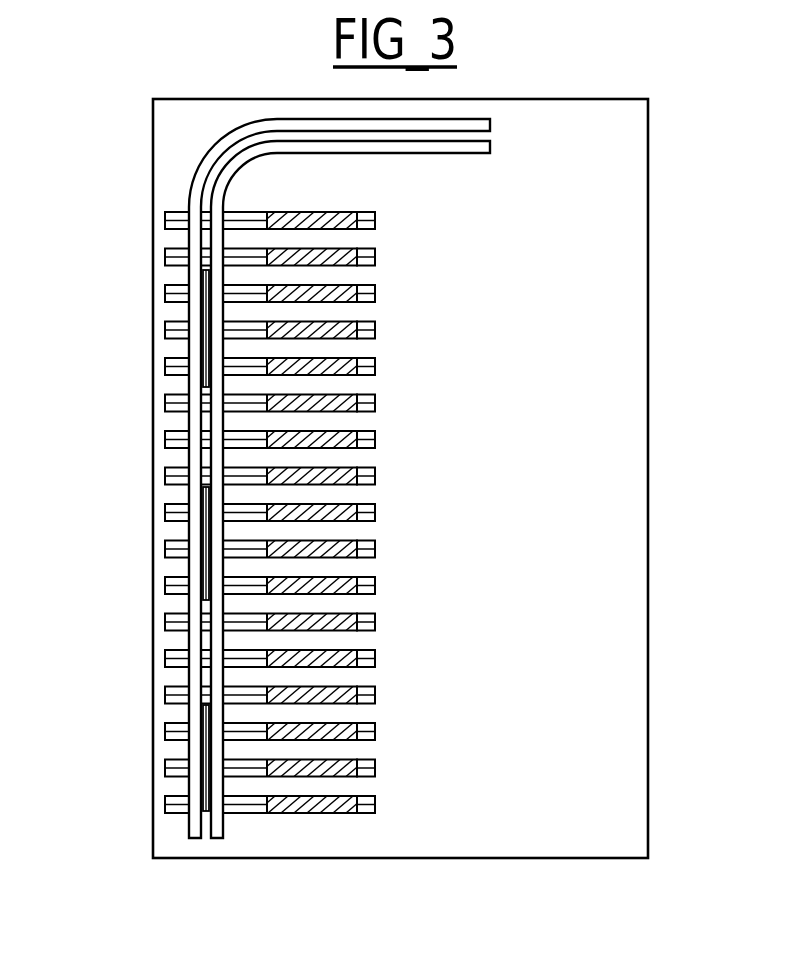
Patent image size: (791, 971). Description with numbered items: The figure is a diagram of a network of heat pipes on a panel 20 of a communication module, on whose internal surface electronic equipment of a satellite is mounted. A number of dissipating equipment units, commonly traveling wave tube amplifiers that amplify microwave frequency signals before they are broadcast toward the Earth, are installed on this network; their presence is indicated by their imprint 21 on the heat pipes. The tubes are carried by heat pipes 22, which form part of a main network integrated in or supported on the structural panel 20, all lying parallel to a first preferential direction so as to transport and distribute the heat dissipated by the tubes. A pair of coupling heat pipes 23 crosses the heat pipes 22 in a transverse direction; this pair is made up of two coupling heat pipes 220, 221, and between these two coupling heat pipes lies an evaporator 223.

The panel 20 is at (648, 302).
The imprint 21 is at (361, 251).
The heat pipes 22 is at (386, 361).
The pair of coupling heat pipes 23 is at (270, 465).
The coupling heat pipe 220 is at (192, 150).
The coupling heat pipe 221 is at (213, 180).
The evaporator 223 is at (194, 318).